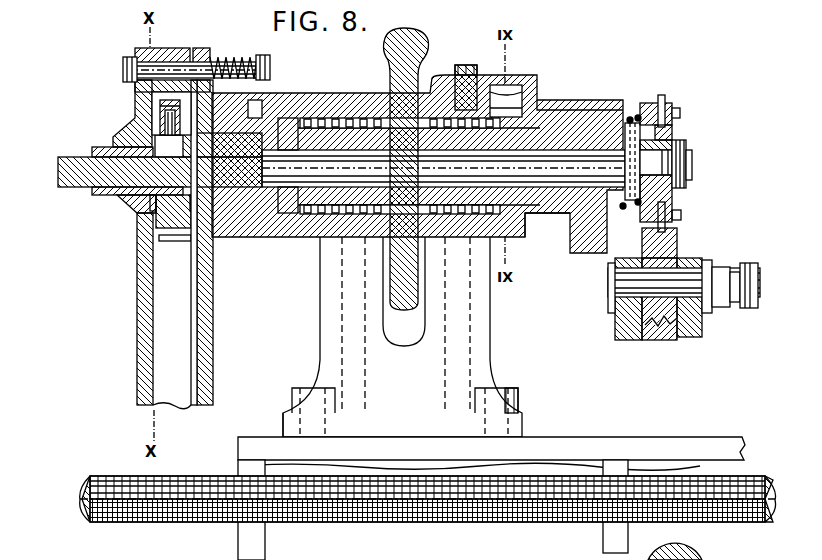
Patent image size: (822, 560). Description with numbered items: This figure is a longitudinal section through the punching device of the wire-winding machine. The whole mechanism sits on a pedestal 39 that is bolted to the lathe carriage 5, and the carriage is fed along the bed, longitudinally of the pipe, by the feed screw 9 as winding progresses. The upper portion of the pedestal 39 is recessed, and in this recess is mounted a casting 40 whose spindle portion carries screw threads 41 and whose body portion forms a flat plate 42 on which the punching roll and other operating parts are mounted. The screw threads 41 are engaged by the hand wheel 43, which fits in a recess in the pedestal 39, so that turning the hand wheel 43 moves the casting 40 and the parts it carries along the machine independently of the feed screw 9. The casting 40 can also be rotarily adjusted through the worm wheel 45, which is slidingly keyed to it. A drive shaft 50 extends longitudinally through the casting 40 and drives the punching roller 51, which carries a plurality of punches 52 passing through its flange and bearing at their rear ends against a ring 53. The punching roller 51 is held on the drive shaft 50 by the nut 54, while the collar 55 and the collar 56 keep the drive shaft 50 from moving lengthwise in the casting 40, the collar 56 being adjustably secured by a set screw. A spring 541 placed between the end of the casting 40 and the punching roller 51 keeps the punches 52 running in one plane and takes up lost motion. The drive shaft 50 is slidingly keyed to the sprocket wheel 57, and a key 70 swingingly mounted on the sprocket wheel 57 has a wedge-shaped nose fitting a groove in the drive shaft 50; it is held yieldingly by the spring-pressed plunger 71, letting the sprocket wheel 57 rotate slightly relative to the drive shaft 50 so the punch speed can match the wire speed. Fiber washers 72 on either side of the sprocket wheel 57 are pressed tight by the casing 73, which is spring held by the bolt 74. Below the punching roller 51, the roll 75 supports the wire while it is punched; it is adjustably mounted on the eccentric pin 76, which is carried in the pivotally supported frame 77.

The lathe carriage 5 is at (596, 440).
The feed screw 9 is at (157, 521).
The pedestal 39 is at (480, 351).
The casting 40 is at (543, 127).
The screw threads 41 is at (357, 214).
The flat plate 42 is at (590, 248).
The hand wheel 43 is at (390, 76).
The worm wheel 45 is at (514, 232).
The drive shaft 50 is at (558, 160).
The punching roller 51 is at (673, 108).
The punches 52 is at (661, 97).
The ring 53 is at (673, 133).
The nut 54 is at (692, 148).
The spring 541 is at (631, 116).
The collar 55 is at (622, 212).
The collar 56 is at (292, 206).
The sprocket wheel 57 is at (155, 224).
The key 70 is at (80, 189).
The spring-pressed plunger 71 is at (150, 128).
The fiber washers 72 is at (248, 108).
The casing 73 is at (136, 326).
The bolt 74 is at (185, 68).
The roll 75 is at (648, 333).
The eccentric pin 76 is at (684, 312).
The frame 77 is at (690, 338).